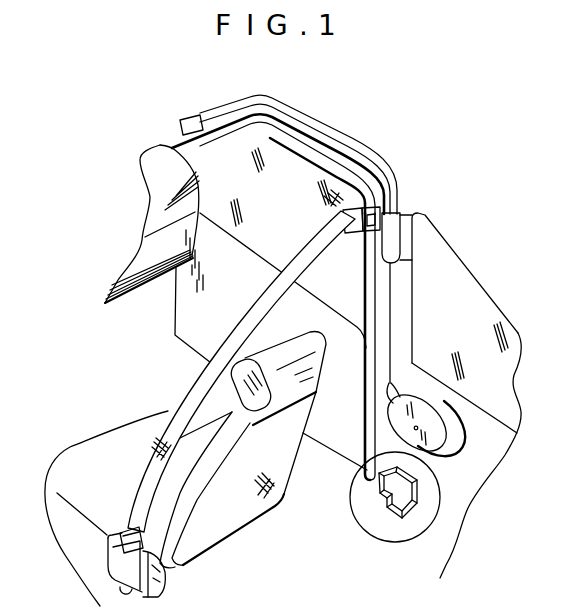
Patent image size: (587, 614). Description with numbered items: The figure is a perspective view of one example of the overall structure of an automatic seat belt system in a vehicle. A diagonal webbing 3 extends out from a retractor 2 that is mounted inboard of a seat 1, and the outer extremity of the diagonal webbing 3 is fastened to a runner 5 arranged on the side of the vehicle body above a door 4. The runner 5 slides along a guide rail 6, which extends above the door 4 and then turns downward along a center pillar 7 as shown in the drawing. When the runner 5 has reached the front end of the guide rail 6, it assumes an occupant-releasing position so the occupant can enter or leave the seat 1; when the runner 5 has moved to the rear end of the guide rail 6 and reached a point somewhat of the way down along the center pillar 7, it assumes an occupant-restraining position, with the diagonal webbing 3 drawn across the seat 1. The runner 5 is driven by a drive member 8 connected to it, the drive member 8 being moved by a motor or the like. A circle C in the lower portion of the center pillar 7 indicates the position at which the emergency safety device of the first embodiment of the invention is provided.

The seat 1 is at (115, 450).
The retractor 2 is at (115, 578).
The diagonal webbing 3 is at (203, 377).
The door 4 is at (297, 173).
The runner 5 is at (375, 206).
The guide rail 6 is at (348, 152).
The center pillar 7 is at (402, 280).
The drive member 8 is at (392, 328).
The circle C is at (398, 543).